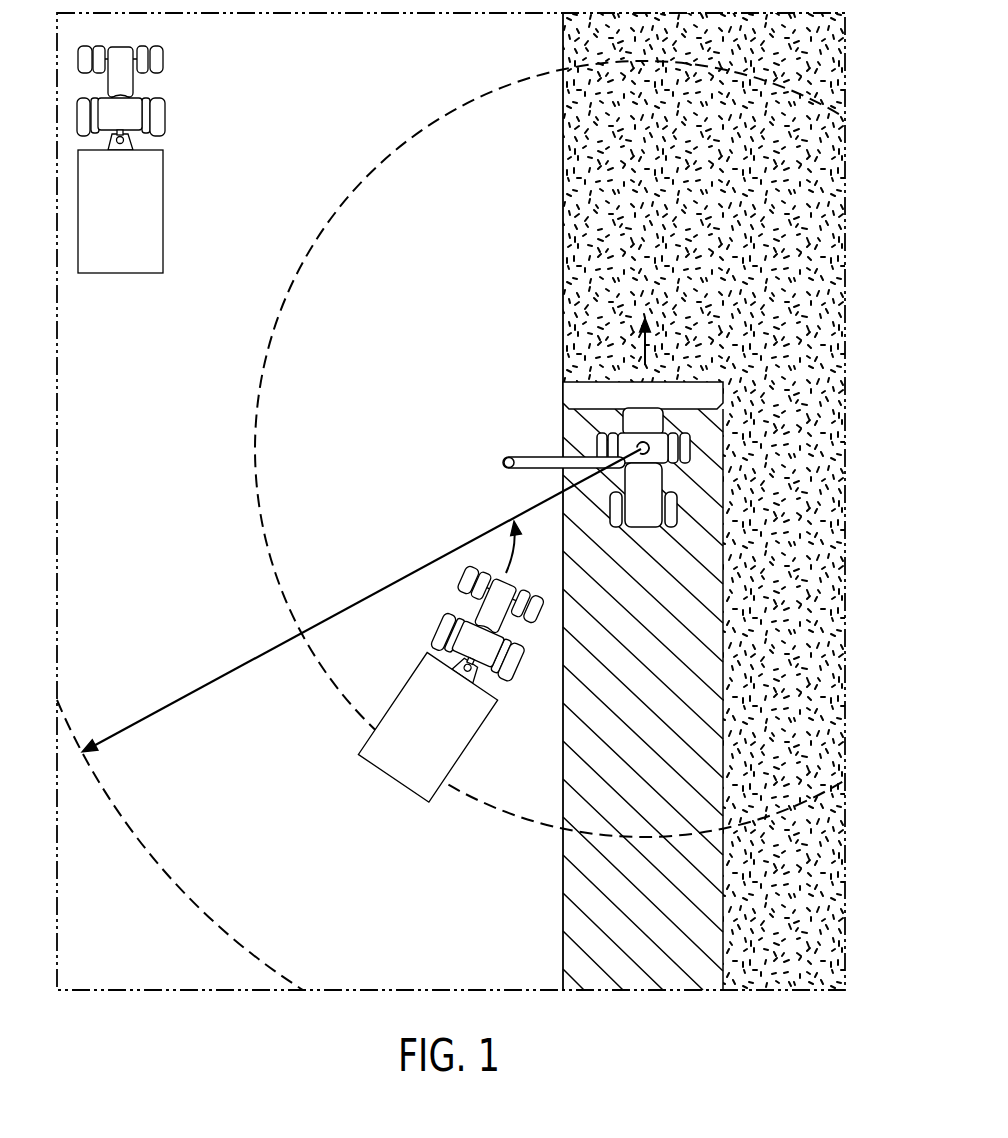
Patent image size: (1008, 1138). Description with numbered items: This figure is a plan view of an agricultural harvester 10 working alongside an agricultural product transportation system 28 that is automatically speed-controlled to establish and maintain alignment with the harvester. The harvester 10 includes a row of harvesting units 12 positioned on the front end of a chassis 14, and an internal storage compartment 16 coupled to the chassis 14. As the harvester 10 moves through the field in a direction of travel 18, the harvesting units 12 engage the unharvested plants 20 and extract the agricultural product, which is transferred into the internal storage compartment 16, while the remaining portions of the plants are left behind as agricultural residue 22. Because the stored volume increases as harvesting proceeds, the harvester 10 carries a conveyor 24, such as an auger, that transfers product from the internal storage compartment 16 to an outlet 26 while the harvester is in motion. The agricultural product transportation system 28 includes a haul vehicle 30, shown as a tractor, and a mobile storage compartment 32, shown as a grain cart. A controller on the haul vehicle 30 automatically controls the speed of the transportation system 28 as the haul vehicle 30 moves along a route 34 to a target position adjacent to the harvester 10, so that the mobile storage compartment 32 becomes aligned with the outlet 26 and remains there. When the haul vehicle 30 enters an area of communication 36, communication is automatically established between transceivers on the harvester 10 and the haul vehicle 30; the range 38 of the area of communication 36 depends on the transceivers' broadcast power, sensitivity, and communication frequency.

The agricultural harvester 10 is at (740, 364).
The harvesting units 12 is at (593, 392).
The chassis 14 is at (590, 557).
The internal storage compartment 16 is at (592, 550).
The direction of travel 18 is at (645, 347).
The unharvested plants 20 is at (589, 212).
The agricultural residue 22 is at (586, 744).
The conveyor 24 is at (530, 409).
The outlet 26 is at (502, 462).
The agricultural product transportation system 28 is at (222, 159).
The haul vehicle 30 is at (133, 85).
The mobile storage compartment 32 is at (163, 255).
The route 34 is at (510, 553).
The area of communication 36 is at (118, 815).
The range 38 is at (153, 715).